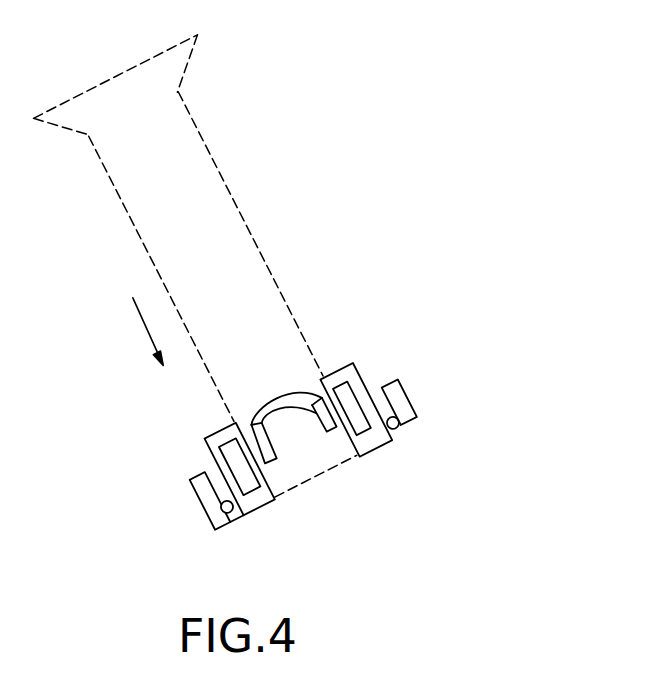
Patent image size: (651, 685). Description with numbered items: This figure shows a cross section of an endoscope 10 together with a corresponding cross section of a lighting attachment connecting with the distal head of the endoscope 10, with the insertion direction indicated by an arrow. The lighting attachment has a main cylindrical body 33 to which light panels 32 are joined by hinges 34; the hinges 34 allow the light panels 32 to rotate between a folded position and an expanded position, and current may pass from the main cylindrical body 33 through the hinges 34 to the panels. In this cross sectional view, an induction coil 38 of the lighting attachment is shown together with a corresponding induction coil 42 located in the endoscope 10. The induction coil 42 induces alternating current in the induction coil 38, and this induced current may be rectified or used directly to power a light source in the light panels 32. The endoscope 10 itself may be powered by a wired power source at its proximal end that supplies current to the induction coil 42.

The endoscope 10 is at (205, 194).
The light panel 32 is at (410, 405).
The main cylindrical body 33 is at (360, 380).
The hinge 34 is at (228, 508).
The induction coil 38 is at (340, 392).
The induction coil 42 is at (278, 398).